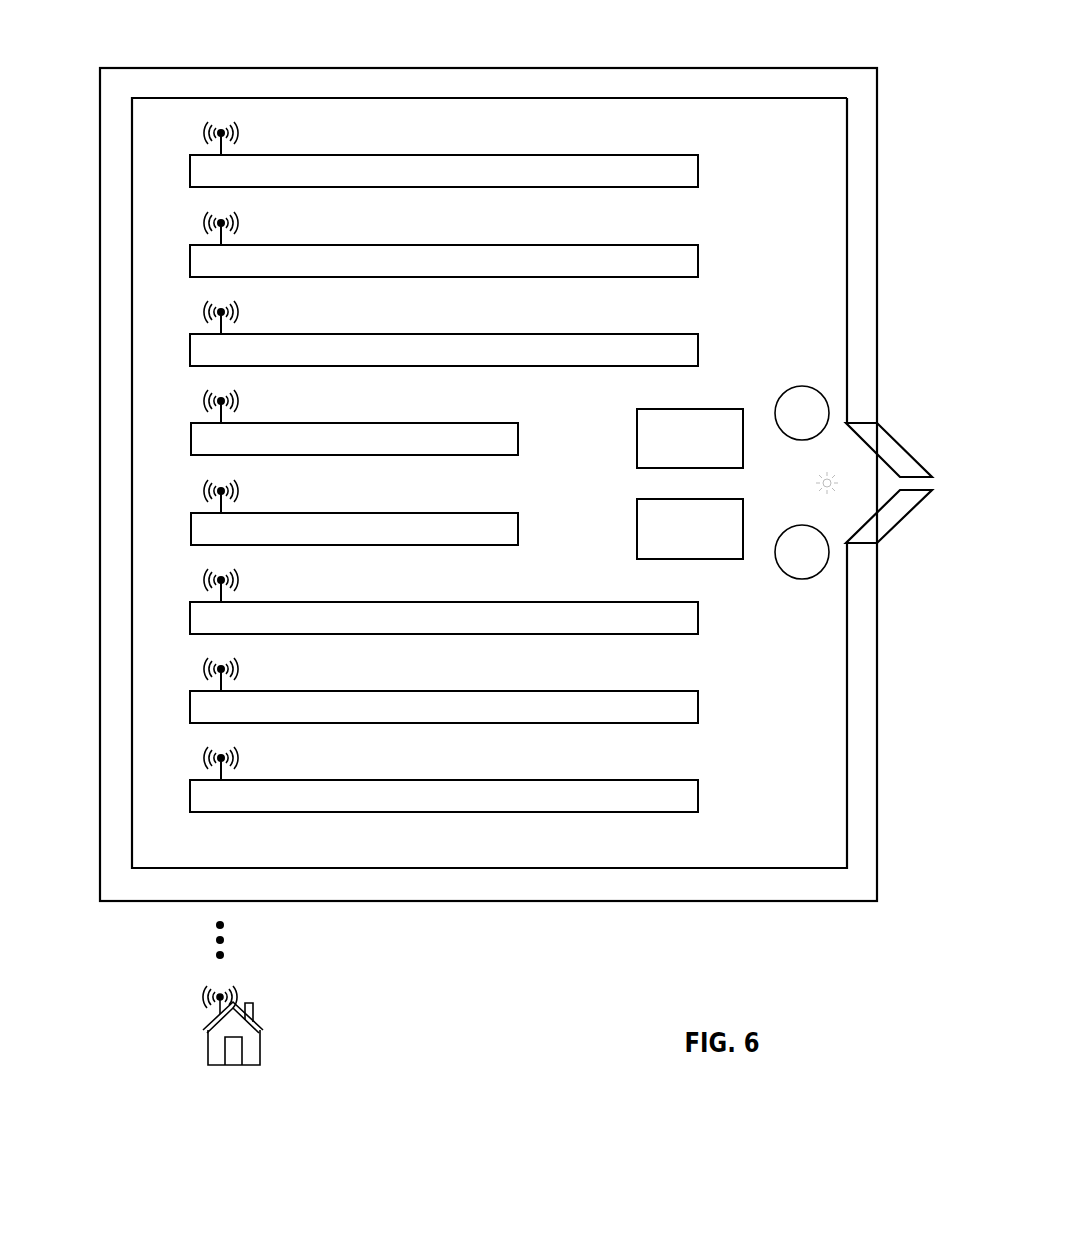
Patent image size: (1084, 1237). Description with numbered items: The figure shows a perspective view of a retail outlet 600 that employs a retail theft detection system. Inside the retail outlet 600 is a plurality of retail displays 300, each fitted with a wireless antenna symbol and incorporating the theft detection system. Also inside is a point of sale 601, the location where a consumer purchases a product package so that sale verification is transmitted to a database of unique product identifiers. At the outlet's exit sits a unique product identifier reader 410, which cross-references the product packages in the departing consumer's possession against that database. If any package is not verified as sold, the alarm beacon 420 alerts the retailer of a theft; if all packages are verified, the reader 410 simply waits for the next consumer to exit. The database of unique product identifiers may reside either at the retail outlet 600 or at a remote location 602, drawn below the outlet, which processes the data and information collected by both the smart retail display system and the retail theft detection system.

The retail outlet 600 is at (378, 53).
The smart retail display 300 is at (444, 154).
The point of sale 601 is at (690, 438).
The unique product identifier reader 410 is at (802, 413).
The alarm beacon 420 is at (889, 483).
The remote location 602 is at (257, 1025).